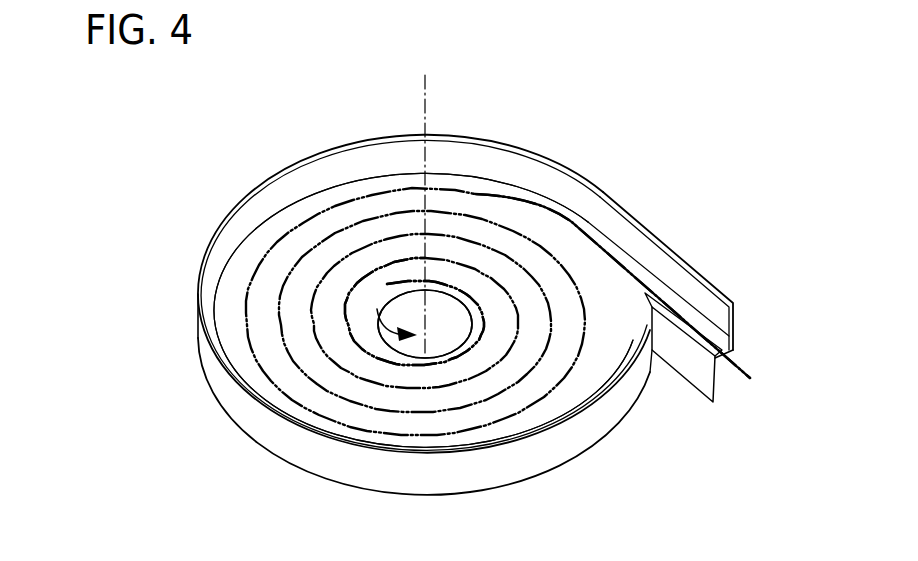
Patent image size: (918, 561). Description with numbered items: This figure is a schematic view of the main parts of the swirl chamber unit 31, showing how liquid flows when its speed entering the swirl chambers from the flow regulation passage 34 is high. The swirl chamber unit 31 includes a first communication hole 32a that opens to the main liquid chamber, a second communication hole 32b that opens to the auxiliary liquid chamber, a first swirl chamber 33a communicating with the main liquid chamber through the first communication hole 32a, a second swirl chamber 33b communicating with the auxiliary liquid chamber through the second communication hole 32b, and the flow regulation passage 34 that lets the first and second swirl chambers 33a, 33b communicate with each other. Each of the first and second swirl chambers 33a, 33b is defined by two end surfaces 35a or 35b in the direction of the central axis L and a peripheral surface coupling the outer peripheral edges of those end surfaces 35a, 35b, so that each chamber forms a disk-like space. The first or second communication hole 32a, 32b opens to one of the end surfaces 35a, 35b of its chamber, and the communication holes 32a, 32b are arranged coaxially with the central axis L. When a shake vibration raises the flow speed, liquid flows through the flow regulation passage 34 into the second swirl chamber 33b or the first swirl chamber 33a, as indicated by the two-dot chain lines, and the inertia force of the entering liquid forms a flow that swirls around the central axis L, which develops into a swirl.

The swirl chamber unit 31 is at (650, 127).
The first communication hole 32a is at (446, 358).
The second communication hole 32b is at (534, 403).
The first swirl chamber 33a is at (300, 203).
The second swirl chamber 33b is at (501, 229).
The flow regulation passage 34 is at (706, 313).
The end surfaces 35a is at (233, 298).
The end surfaces 35b is at (347, 310).
The central axis L is at (435, 92).